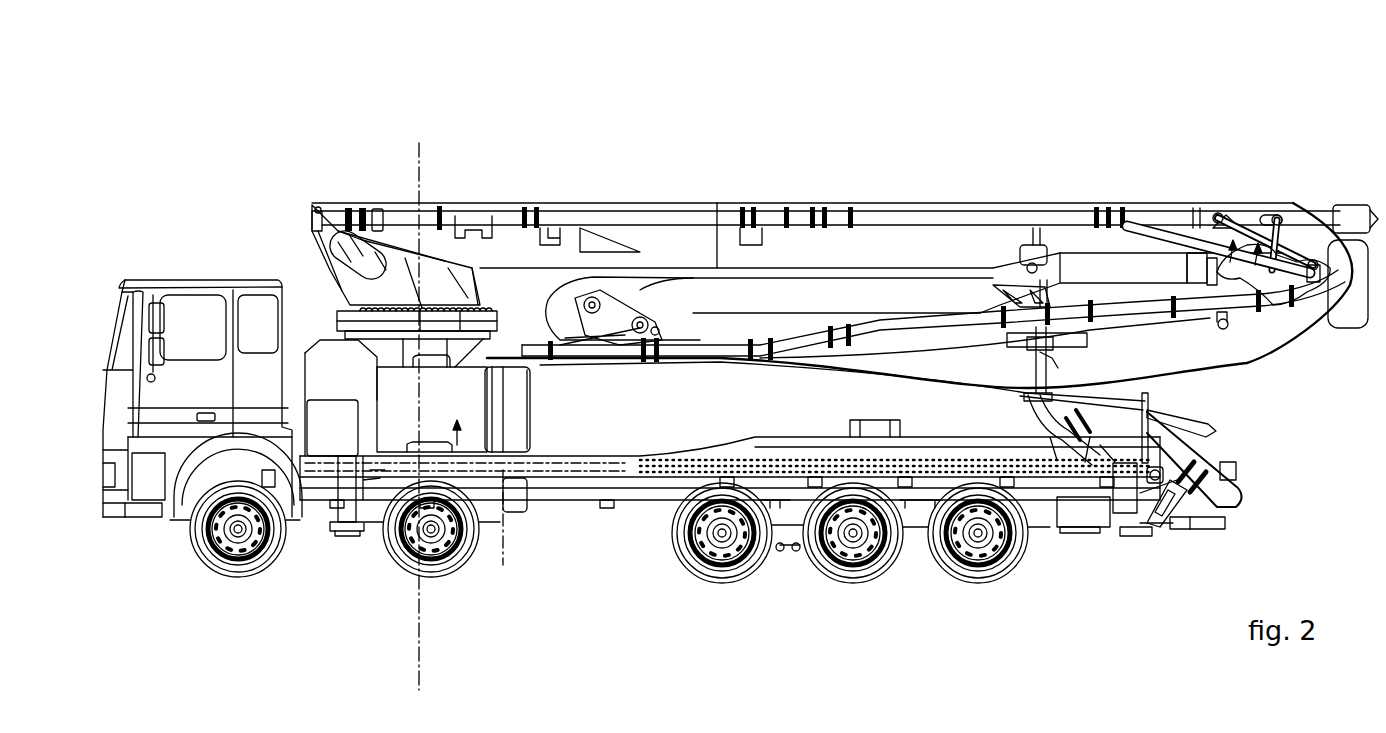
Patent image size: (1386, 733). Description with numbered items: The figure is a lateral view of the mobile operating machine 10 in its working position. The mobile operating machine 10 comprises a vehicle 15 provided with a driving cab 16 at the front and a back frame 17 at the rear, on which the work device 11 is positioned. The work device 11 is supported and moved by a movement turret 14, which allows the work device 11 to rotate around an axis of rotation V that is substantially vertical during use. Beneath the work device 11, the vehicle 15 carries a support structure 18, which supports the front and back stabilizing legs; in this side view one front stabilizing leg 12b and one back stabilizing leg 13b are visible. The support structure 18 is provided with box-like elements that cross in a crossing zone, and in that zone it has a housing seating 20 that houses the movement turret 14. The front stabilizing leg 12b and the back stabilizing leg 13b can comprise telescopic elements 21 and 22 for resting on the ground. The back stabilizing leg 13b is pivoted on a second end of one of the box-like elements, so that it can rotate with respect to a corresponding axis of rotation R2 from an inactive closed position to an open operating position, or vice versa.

The mobile operating machine 10 is at (376, 86).
The work device 11 is at (878, 252).
The front stabilizing leg 12b is at (345, 548).
The back stabilizing leg 13b is at (718, 420).
The movement turret 14 is at (312, 264).
The vehicle 15 is at (157, 532).
The driving cab 16 is at (190, 325).
The back frame 17 is at (1030, 556).
The support structure 18 is at (466, 490).
The housing seating 20 is at (492, 320).
The telescopic element 21 is at (333, 497).
The telescopic element 22 is at (1135, 503).
The axis of rotation V is at (421, 143).
The axis of rotation R2 is at (505, 557).